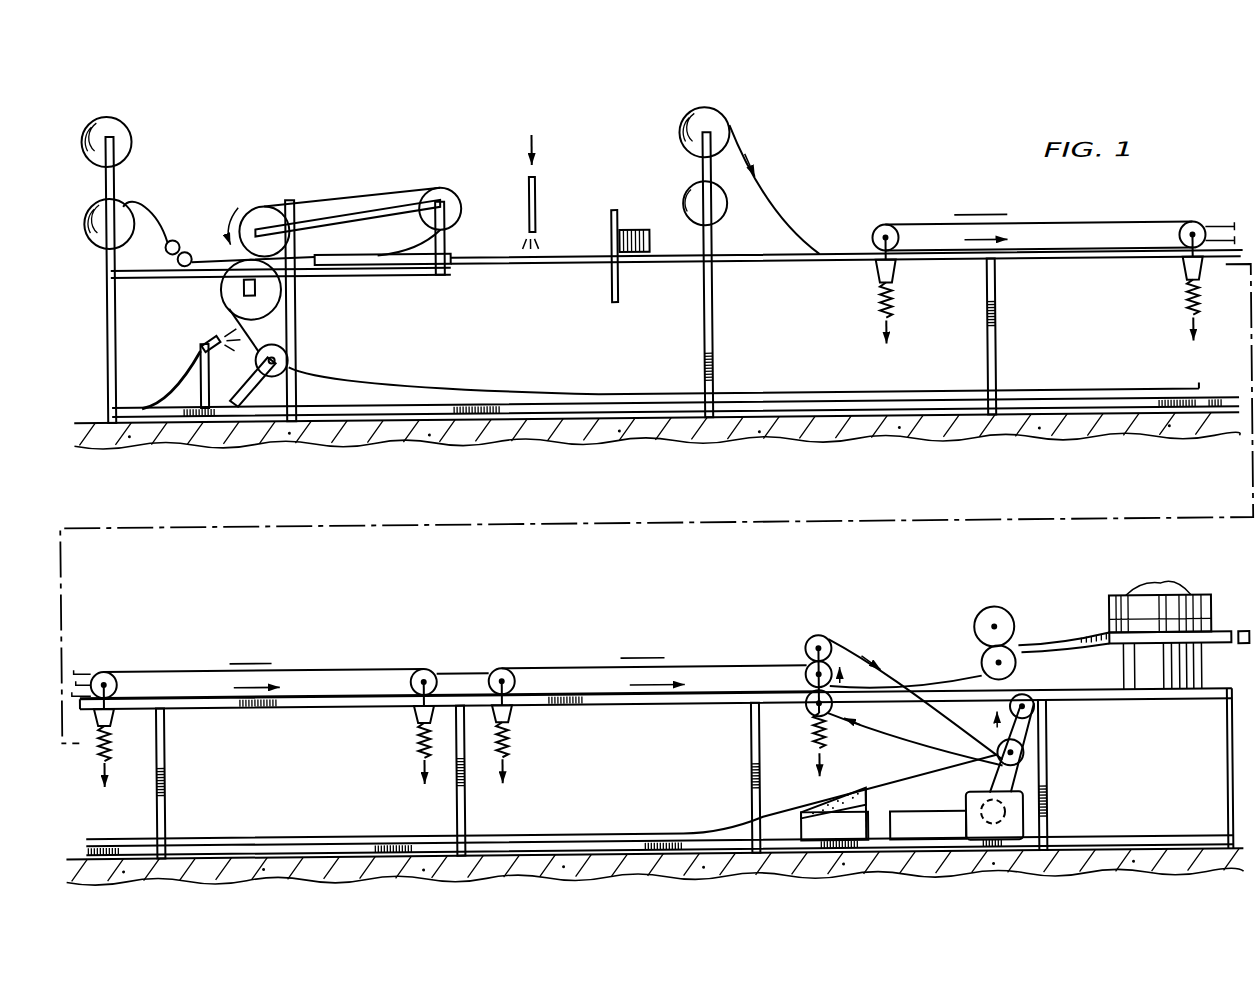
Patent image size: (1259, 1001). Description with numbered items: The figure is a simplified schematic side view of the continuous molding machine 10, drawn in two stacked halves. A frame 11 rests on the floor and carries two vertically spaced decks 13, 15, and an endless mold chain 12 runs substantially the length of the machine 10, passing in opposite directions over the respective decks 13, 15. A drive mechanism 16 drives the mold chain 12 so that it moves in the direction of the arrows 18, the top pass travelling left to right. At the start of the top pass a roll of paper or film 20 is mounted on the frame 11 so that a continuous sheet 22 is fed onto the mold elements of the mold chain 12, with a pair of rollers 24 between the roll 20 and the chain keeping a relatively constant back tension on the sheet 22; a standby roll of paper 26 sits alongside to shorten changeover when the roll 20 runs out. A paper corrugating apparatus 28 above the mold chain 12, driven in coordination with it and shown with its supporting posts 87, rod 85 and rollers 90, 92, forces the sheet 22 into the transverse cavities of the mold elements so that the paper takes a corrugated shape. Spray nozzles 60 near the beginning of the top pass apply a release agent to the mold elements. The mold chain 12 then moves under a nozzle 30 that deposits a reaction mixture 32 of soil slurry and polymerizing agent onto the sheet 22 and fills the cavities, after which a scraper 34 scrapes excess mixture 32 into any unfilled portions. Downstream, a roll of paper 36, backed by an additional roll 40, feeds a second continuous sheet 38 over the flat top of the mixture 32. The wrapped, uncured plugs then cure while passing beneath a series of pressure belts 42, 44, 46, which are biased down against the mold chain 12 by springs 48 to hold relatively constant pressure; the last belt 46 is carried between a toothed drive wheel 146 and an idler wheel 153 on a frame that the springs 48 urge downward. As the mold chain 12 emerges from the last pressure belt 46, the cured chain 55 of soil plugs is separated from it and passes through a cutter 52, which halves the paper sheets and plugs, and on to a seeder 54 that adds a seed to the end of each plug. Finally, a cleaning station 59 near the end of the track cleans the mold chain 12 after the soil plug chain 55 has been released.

The continuous molding machine 10 is at (874, 193).
The frame 11 is at (718, 342).
The endless mold chain 12 is at (487, 266).
The deck 13 is at (750, 401).
The deck 15 is at (790, 264).
The drive mechanism 16 is at (1024, 780).
The arrow 18 is at (766, 276).
The roll of paper or film 20 is at (132, 201).
The sheet of paper or film 22 is at (206, 246).
The pair of rollers 24 is at (171, 257).
The standby roll of paper 26 is at (136, 133).
The paper corrugating apparatus 28 is at (341, 193).
The nozzle 30 is at (540, 194).
The reaction mixture 32 is at (541, 242).
The scraper 34 is at (633, 240).
The roll of paper 36 is at (727, 127).
The second sheet of paper or film 38 is at (766, 204).
The additional roll of paper 40 is at (719, 224).
The pressure belt 42 is at (1036, 225).
The pressure belt 44 is at (163, 666).
The pressure belt 46 is at (570, 667).
The springs 48 is at (897, 300).
The cutter 52 is at (1008, 605).
The seeder 54 is at (1187, 592).
The cured chain of soil plugs 55 is at (928, 676).
The cleaning station 59 is at (874, 802).
The spray nozzles 60 is at (212, 339).
The rod 85 is at (369, 214).
The post 87 is at (295, 198).
The roller 90 is at (262, 205).
The roller 92 is at (449, 196).
The drive wheel 146 is at (803, 668).
The idler wheel 153 is at (507, 675).